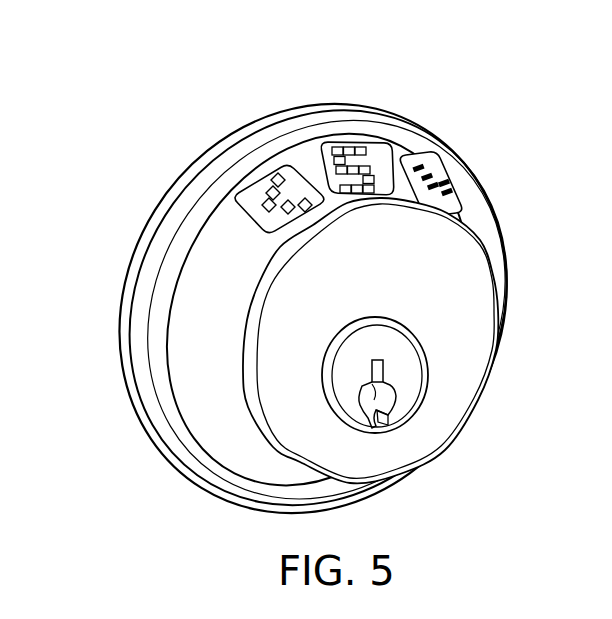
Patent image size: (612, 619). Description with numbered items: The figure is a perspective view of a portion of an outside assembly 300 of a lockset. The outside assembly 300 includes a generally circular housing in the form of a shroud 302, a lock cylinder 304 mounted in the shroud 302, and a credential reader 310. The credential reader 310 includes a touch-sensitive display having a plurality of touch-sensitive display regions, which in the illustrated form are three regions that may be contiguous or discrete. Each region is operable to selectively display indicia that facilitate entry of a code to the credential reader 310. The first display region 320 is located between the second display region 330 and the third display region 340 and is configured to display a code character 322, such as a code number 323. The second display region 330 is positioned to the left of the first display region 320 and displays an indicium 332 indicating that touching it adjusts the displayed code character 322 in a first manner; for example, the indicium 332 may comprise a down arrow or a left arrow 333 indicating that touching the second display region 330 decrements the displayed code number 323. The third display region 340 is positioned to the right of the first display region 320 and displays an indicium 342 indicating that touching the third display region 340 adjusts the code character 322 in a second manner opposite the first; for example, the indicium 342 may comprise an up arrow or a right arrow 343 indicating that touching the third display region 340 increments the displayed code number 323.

The outside assembly 300 is at (163, 75).
The shroud 302 is at (122, 292).
The lock cylinder 304 is at (348, 400).
The credential reader 310 is at (213, 212).
The first display region 320 is at (337, 141).
The code character 322 is at (377, 150).
The code number 323 is at (378, 138).
The second display region 330 is at (296, 170).
The indicium 332 is at (259, 197).
The left arrow 333 is at (265, 166).
The third display region 340 is at (418, 151).
The indicium 342 is at (450, 183).
The right arrow 343 is at (470, 165).